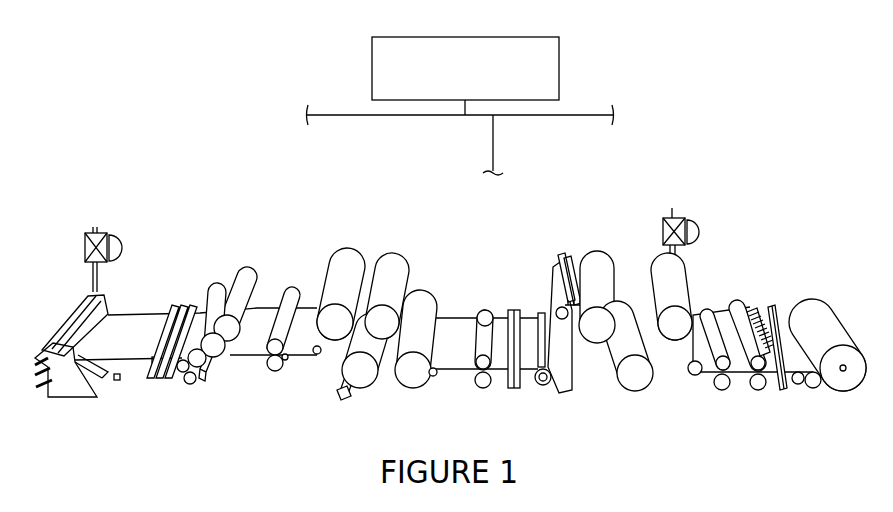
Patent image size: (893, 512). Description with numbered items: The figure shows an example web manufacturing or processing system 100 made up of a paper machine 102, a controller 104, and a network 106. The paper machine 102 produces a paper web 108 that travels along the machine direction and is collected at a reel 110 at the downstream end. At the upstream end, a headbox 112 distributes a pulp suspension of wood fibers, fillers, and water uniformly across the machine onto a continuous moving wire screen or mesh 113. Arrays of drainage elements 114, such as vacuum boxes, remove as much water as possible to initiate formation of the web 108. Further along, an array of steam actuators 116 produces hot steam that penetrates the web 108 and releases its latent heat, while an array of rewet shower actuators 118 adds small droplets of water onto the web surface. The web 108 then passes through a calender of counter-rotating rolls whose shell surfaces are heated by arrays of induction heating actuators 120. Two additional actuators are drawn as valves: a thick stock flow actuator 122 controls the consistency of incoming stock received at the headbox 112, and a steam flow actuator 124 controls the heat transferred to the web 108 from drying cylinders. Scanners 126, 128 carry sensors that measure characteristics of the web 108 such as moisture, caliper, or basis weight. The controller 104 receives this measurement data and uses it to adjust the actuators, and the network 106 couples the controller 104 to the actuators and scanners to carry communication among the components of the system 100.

The web manufacturing or processing system 100 is at (198, 37).
The paper machine 102 is at (262, 226).
The controller 104 is at (372, 83).
The network 106 is at (365, 116).
The paper web 108 is at (251, 360).
The reel 110 is at (852, 394).
The headbox 112 is at (55, 315).
The wire screen or mesh 113 is at (133, 382).
The drainage elements 114 is at (218, 370).
The steam actuators 116 is at (347, 404).
The rewet shower actuators 118 is at (566, 251).
The induction heating actuators 120 is at (768, 376).
The thick stock flow actuator 122 is at (110, 229).
The steam flow actuator 124 is at (688, 215).
The scanner 126 is at (515, 391).
The scanner 128 is at (766, 303).